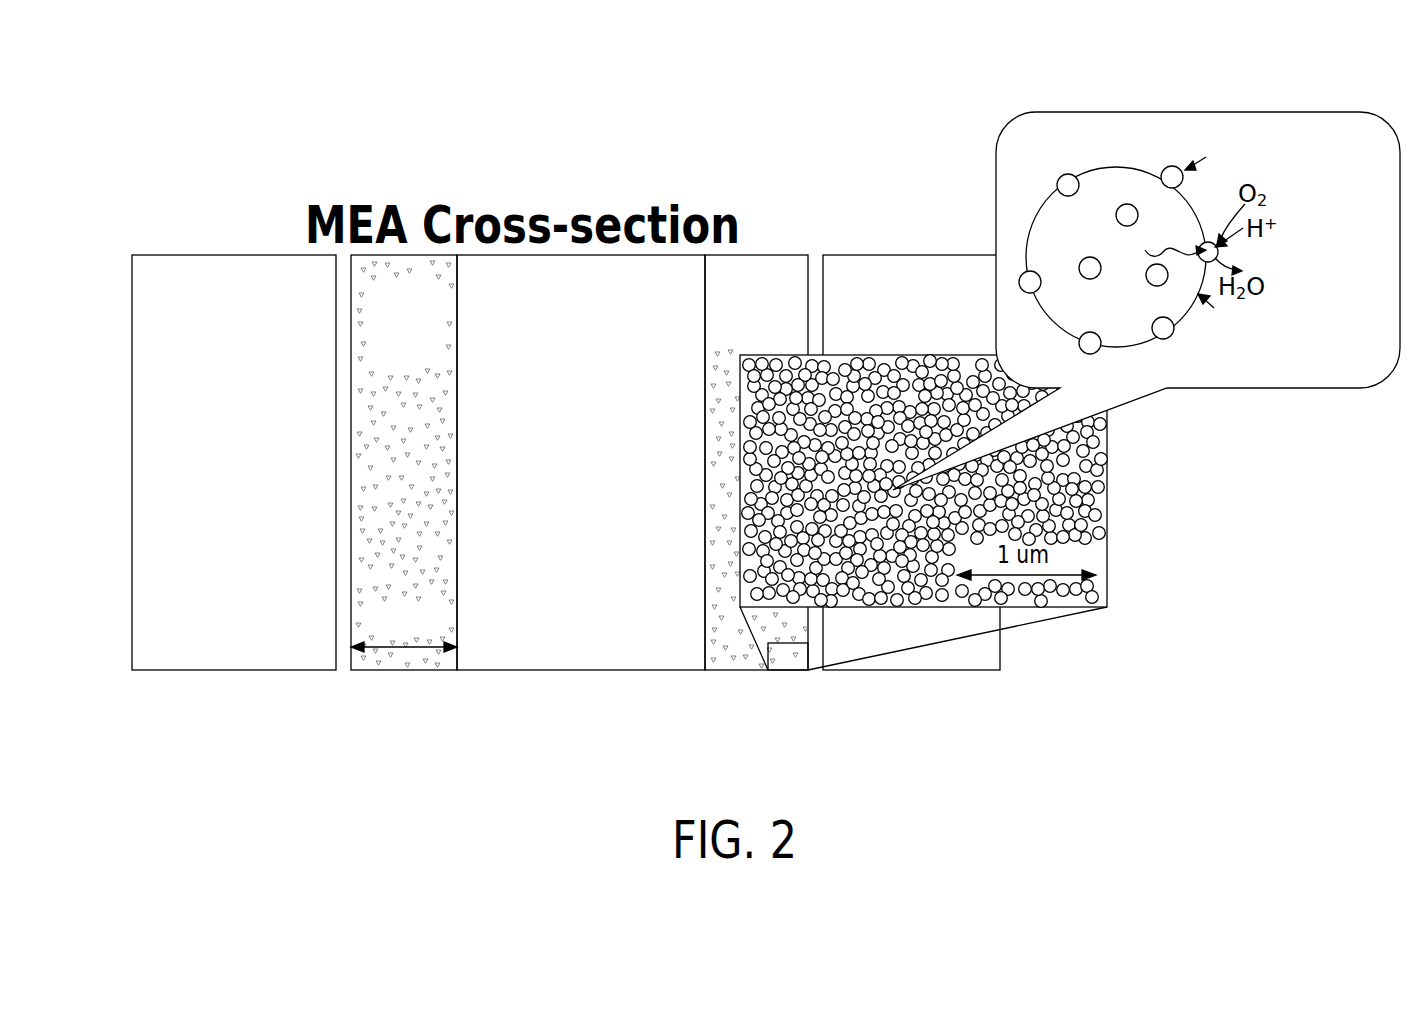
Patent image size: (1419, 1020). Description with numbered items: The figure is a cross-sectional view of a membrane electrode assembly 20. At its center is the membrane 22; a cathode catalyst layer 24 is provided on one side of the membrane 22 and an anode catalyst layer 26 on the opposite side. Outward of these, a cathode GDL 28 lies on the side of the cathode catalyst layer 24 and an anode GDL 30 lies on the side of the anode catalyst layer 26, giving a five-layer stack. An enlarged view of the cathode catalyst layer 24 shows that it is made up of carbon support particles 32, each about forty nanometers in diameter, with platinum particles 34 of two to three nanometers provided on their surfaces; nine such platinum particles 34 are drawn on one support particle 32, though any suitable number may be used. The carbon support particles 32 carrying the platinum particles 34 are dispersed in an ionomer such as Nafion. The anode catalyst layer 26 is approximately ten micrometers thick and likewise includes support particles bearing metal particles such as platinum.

The membrane electrode assembly 20 is at (752, 137).
The membrane 22 is at (588, 670).
The cathode catalyst layer 24 is at (752, 670).
The anode catalyst layer 26 is at (400, 670).
The cathode GDL 28 is at (962, 670).
The anode GDL 30 is at (233, 670).
The carbon support particle 32 is at (1140, 346).
The platinum particle 34 is at (1172, 166).